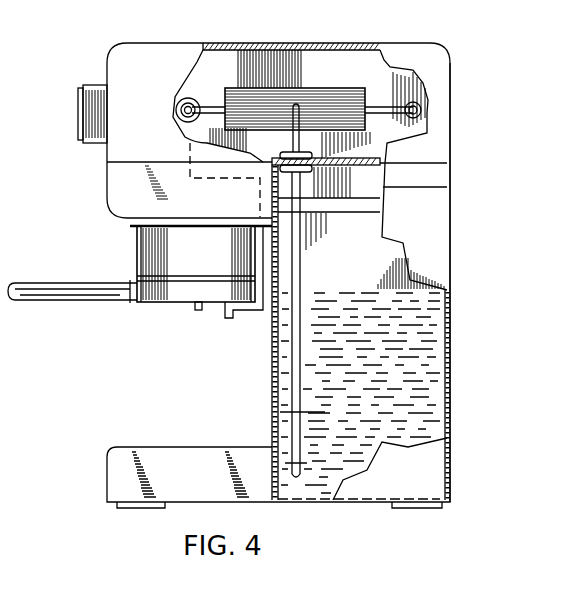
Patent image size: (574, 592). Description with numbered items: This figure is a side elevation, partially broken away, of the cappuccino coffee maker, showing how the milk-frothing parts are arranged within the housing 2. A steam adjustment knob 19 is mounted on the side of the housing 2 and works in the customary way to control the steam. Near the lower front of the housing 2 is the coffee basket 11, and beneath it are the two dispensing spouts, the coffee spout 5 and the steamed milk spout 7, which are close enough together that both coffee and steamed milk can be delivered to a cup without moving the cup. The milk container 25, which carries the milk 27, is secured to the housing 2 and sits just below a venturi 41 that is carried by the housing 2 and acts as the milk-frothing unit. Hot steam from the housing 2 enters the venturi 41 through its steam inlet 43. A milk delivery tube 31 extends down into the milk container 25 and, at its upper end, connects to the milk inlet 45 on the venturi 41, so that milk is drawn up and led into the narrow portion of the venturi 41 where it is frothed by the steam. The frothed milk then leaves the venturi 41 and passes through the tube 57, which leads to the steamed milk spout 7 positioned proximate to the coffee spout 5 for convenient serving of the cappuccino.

The housing 2 is at (122, 60).
The steam adjustment knob 19 is at (88, 140).
The tube 57 is at (206, 107).
The venturi 41 is at (327, 92).
The steam inlet 43 is at (425, 106).
The milk inlet 45 is at (305, 148).
The milk container 25 is at (450, 220).
The milk 27 is at (427, 325).
The milk delivery tube 31 is at (302, 272).
The coffee basket 11 is at (137, 258).
The coffee spout 5 is at (197, 312).
The steamed milk spout 7 is at (231, 321).